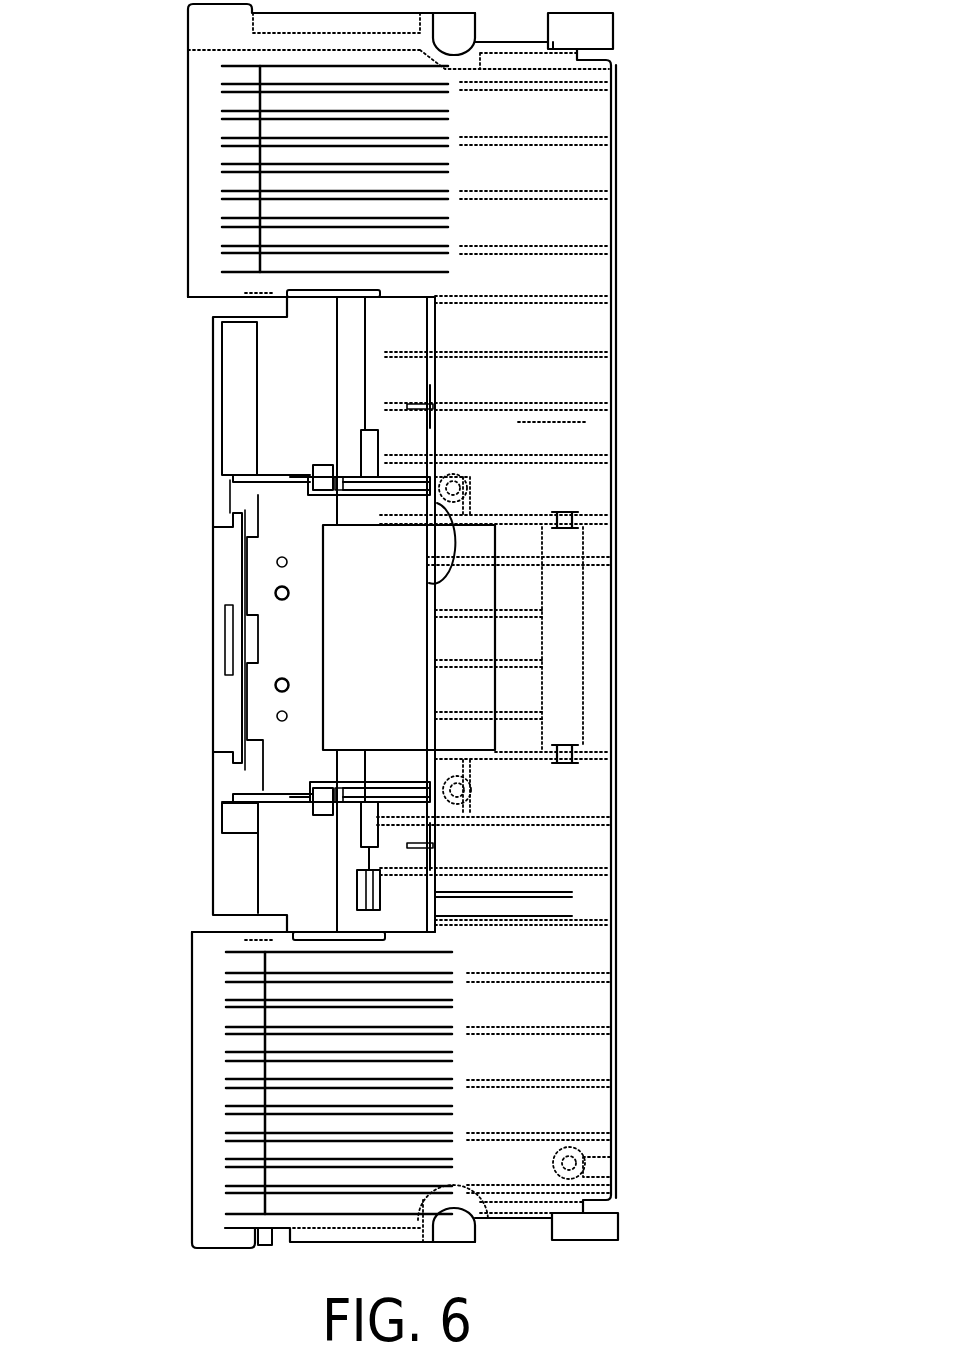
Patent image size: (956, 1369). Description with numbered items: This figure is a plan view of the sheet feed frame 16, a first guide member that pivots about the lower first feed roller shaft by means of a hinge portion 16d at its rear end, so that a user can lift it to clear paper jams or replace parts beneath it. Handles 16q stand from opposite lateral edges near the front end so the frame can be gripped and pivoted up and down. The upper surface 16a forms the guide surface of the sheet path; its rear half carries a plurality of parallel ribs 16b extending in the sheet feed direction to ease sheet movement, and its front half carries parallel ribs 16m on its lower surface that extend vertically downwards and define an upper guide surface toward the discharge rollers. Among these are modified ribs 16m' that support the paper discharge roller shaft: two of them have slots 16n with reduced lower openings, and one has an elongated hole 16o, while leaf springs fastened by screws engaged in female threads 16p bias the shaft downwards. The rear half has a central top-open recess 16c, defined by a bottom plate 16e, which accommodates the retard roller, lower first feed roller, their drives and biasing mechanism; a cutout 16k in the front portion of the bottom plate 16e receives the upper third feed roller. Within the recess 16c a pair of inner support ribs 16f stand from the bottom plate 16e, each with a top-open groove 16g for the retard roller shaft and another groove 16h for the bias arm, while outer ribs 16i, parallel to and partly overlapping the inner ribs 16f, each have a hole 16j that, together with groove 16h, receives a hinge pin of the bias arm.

The sheet feed frame 16 is at (92, 536).
The upper surface 16a is at (588, 222).
The parallel ribs 16b is at (223, 218).
The top-open recess 16c is at (200, 309).
The hinge portion 16d is at (200, 30).
The bottom plate 16e is at (324, 405).
The inner support ribs 16f is at (428, 476).
The top-open groove 16g is at (378, 497).
The top-open groove 16h is at (322, 497).
The outer ribs 16i is at (277, 472).
The hole 16j is at (335, 463).
The cutout 16k is at (403, 657).
The parallel ribs 16m is at (565, 647).
The modified ribs 16m' is at (544, 613).
The slots 16n is at (575, 457).
The elongated hole 16o is at (563, 763).
The female thread 16p is at (468, 488).
The handles 16q is at (615, 30).